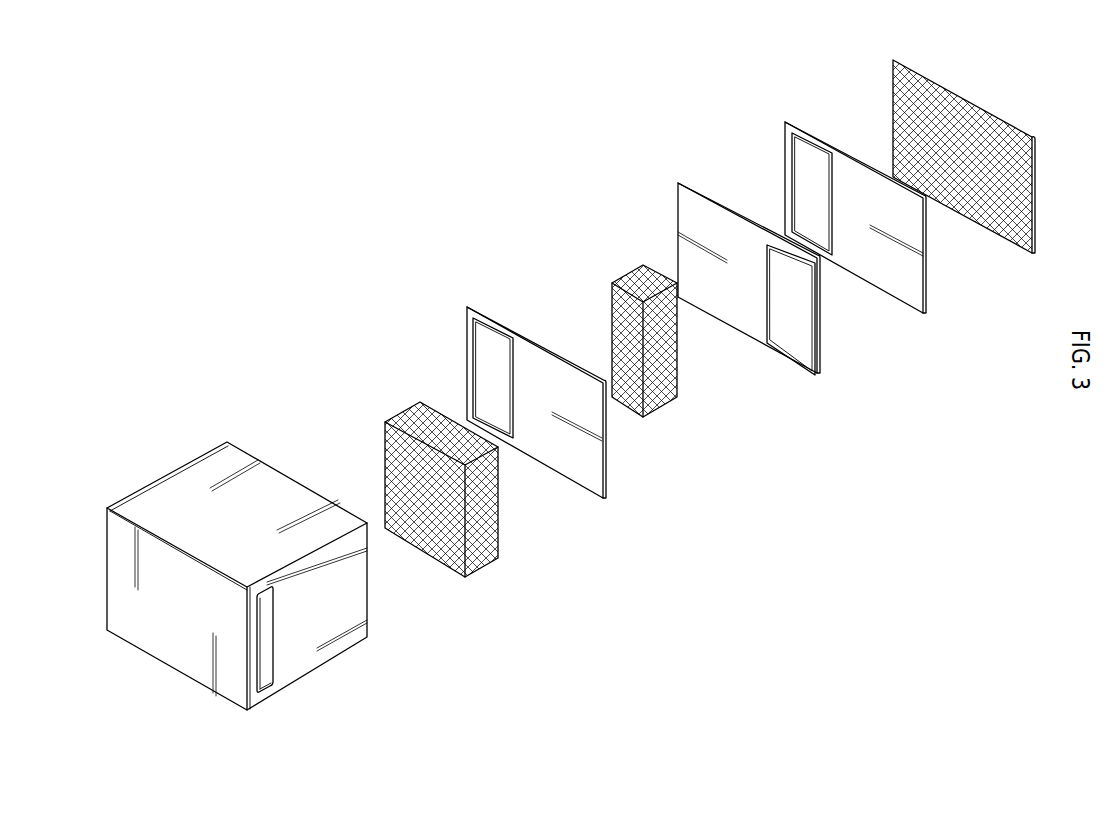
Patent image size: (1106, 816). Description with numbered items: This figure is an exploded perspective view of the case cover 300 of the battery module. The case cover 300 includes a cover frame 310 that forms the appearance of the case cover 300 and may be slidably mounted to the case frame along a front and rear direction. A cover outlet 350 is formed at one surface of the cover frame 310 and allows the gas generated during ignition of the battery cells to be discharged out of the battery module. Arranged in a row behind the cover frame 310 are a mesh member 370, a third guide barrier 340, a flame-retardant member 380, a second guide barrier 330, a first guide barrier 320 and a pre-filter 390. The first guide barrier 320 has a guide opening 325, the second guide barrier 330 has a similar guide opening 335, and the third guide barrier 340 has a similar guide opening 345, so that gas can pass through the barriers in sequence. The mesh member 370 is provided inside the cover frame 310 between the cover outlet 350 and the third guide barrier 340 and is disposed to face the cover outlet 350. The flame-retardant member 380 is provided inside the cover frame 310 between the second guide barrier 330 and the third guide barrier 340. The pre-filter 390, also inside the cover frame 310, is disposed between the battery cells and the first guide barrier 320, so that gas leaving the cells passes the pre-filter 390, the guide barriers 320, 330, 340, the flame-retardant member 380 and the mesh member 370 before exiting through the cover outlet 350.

The case cover 300 is at (322, 209).
The cover frame 310 is at (160, 474).
The first guide barrier 320 is at (789, 120).
The guide opening 325 is at (805, 160).
The second guide barrier 330 is at (677, 182).
The guide opening 335 is at (791, 329).
The third guide barrier 340 is at (465, 305).
The guide opening 345 is at (491, 346).
The cover outlet 350 is at (266, 673).
The mesh member 370 is at (393, 415).
The flame-retardant member 380 is at (624, 277).
The pre-filter 390 is at (892, 57).